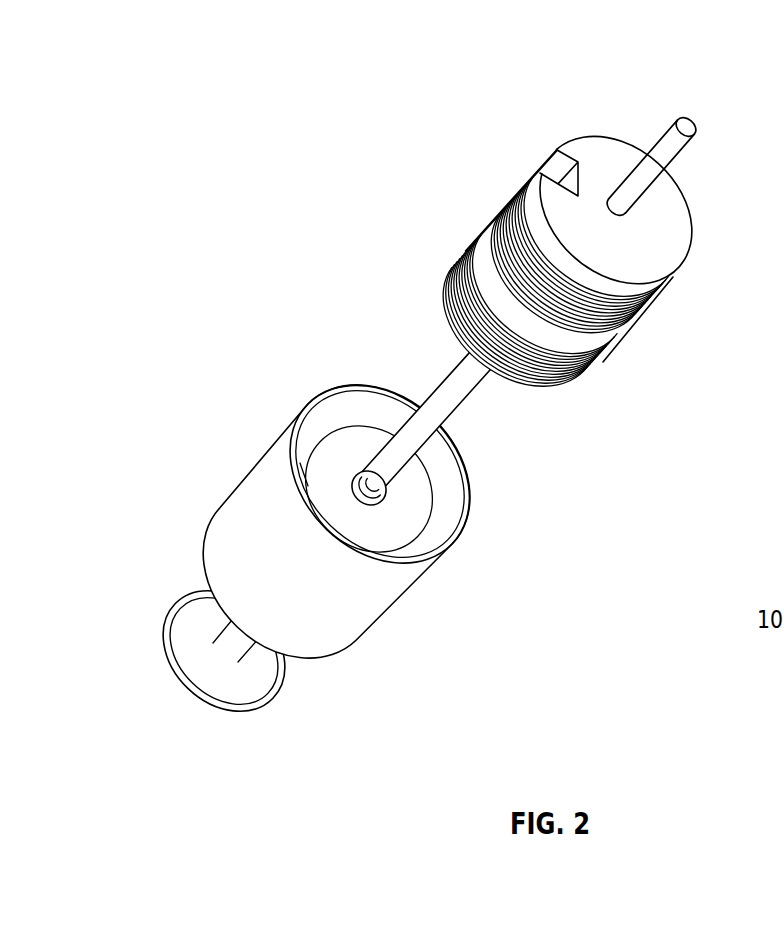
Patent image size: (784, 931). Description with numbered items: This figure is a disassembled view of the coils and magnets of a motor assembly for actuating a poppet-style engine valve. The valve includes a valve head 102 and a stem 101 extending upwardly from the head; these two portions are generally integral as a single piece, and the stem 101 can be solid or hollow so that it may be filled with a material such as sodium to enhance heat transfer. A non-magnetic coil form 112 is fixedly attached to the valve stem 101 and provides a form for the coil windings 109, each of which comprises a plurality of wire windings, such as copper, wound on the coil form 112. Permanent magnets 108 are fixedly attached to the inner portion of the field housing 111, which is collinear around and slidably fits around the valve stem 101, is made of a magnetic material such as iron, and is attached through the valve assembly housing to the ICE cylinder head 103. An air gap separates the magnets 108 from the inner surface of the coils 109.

The stem 101 is at (692, 150).
The valve head 102 is at (276, 702).
The ICE cylinder head 103 is at (768, 460).
The permanent magnets 108 is at (406, 534).
The coil windings 109 is at (603, 363).
The field housing 111 is at (389, 617).
The coil form 112 is at (668, 245).